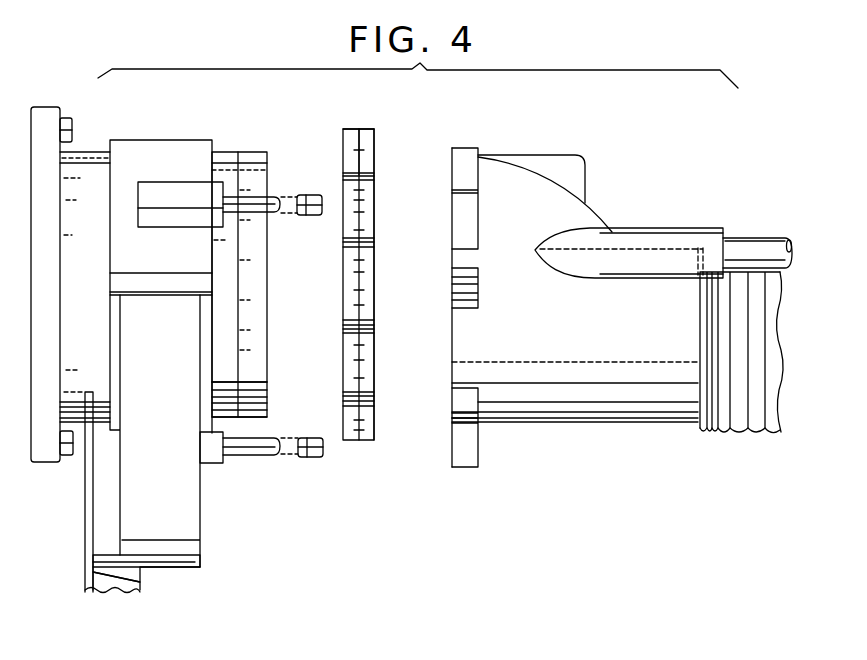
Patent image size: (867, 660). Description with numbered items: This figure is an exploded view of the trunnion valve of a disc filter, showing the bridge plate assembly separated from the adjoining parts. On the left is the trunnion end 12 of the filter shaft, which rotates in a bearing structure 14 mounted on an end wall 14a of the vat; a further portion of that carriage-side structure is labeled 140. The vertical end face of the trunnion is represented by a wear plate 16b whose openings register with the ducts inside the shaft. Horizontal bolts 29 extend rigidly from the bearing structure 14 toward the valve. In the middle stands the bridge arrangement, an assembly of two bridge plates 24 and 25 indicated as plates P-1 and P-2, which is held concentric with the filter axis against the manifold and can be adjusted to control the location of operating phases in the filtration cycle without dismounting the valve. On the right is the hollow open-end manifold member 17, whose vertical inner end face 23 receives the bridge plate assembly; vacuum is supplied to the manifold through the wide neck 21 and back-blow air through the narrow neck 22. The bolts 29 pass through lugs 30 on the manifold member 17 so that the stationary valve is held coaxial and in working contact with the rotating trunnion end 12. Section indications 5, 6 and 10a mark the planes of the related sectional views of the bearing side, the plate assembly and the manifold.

The trunnion end 12 is at (88, 152).
The bearing structure 14 is at (158, 150).
The end wall 14a is at (85, 578).
The carriage foot 140 is at (86, 588).
The wear plate 16b is at (248, 360).
The horizontal bolts 29 is at (274, 196).
The bridge plate 24 is at (352, 128).
The bridge plate 25 is at (367, 128).
The first plate P-1 is at (343, 308).
The second plate P-2 is at (374, 313).
The vertical inner end face 23 is at (452, 342).
The lugs 30 is at (467, 223).
The manifold member 17 is at (617, 294).
The narrow neck 22 is at (695, 237).
The wide neck 21 is at (672, 418).
The section line 5 is at (283, 507).
The section line 6 is at (387, 492).
The section line 10a is at (462, 495).